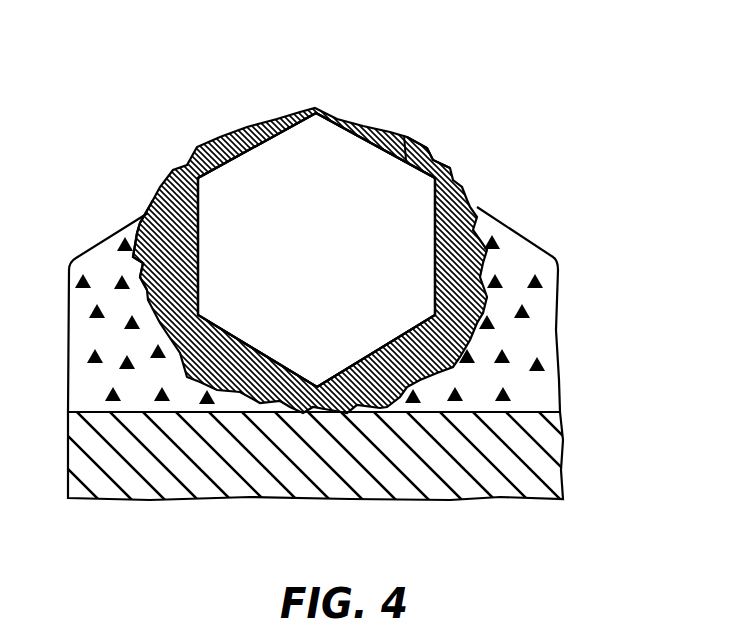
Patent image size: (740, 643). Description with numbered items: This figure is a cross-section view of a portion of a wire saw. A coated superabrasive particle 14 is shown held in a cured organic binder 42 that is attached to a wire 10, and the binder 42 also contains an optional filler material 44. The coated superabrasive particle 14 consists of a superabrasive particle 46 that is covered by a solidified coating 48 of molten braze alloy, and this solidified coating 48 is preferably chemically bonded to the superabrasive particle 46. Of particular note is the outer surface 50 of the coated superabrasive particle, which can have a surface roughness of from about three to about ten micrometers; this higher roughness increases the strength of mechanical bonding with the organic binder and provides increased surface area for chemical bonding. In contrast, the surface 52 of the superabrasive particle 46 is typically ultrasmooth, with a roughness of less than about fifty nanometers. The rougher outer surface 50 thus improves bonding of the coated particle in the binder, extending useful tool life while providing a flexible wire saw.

The wire 10 is at (563, 458).
The coated superabrasive particle 14 is at (381, 97).
The cured organic binder 42 is at (558, 335).
The filler material 44 is at (535, 275).
The superabrasive particle 46 is at (322, 125).
The solidified coating 48 is at (210, 145).
The outer surface 50 is at (147, 280).
The surface of the superabrasive particle 52 is at (410, 133).